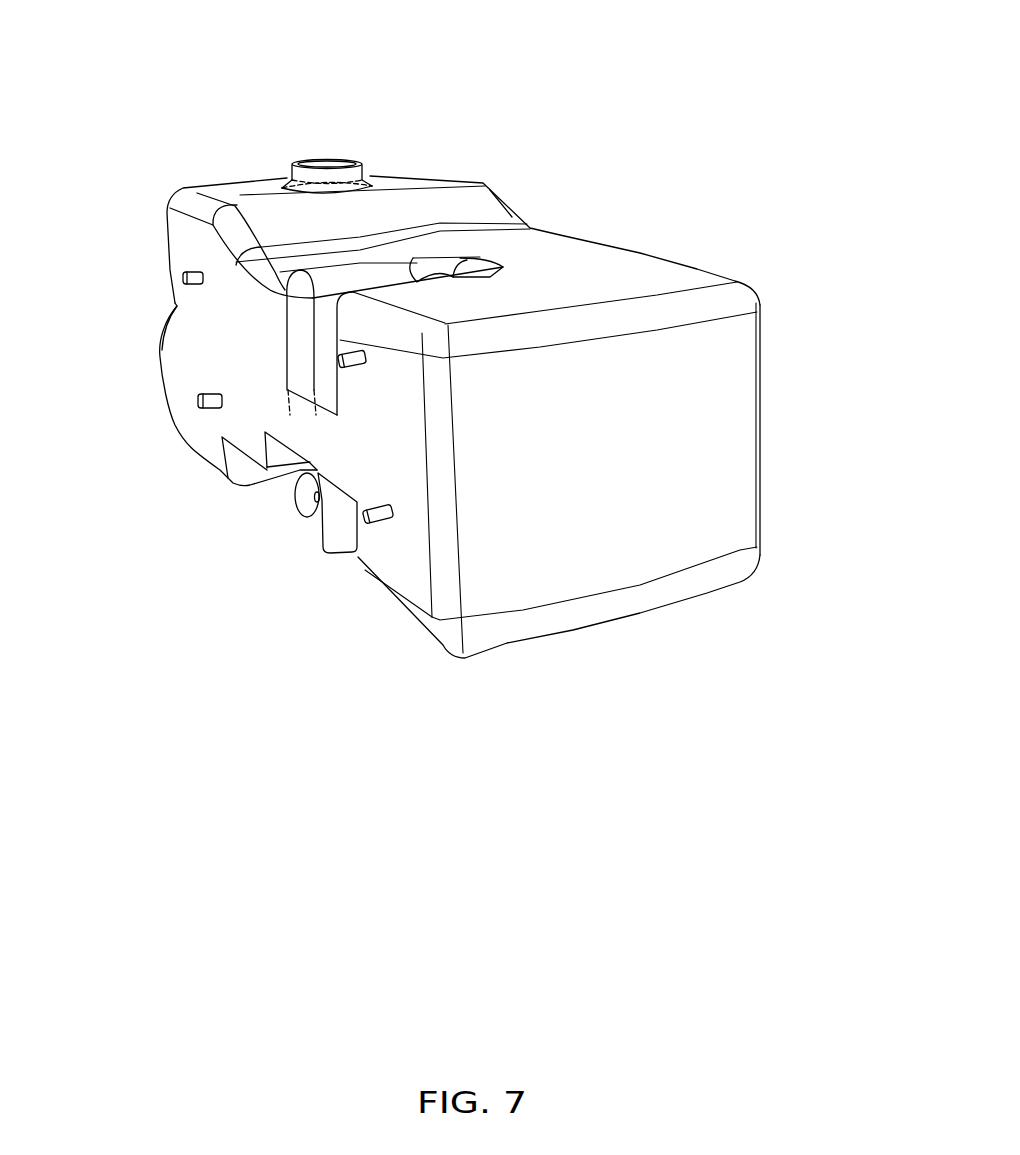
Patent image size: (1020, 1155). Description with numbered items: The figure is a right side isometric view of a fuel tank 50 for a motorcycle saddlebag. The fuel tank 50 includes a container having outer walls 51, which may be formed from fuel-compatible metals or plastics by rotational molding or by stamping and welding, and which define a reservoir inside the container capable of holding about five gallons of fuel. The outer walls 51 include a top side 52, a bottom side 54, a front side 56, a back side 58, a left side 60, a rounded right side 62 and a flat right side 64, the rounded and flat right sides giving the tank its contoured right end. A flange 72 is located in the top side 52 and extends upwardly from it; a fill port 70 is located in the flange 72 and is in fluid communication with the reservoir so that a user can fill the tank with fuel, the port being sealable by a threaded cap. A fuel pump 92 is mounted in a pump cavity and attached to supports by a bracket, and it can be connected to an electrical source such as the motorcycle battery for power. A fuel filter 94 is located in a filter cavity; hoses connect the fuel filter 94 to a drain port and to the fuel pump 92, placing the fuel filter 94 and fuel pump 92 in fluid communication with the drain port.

The fuel tank 50 is at (217, 67).
The outer walls 51 is at (620, 522).
The top side 52 is at (560, 262).
The bottom side 54 is at (420, 630).
The front side 56 is at (760, 470).
The back side 58 is at (315, 438).
The left side 60 is at (667, 332).
The rounded right side 62 is at (163, 370).
The flat right side 64 is at (168, 242).
The fill port 70 is at (327, 165).
The flange 72 is at (363, 172).
The fuel pump 92 is at (338, 552).
The fuel filter 94 is at (305, 510).